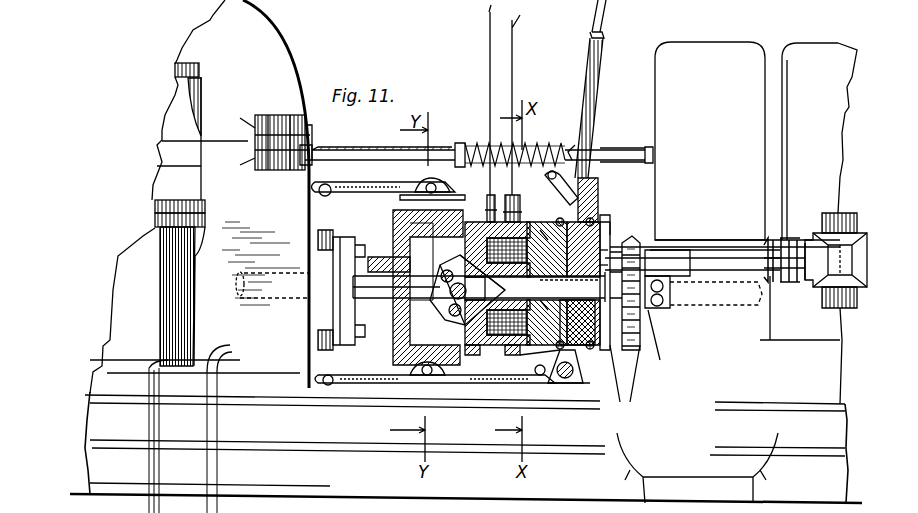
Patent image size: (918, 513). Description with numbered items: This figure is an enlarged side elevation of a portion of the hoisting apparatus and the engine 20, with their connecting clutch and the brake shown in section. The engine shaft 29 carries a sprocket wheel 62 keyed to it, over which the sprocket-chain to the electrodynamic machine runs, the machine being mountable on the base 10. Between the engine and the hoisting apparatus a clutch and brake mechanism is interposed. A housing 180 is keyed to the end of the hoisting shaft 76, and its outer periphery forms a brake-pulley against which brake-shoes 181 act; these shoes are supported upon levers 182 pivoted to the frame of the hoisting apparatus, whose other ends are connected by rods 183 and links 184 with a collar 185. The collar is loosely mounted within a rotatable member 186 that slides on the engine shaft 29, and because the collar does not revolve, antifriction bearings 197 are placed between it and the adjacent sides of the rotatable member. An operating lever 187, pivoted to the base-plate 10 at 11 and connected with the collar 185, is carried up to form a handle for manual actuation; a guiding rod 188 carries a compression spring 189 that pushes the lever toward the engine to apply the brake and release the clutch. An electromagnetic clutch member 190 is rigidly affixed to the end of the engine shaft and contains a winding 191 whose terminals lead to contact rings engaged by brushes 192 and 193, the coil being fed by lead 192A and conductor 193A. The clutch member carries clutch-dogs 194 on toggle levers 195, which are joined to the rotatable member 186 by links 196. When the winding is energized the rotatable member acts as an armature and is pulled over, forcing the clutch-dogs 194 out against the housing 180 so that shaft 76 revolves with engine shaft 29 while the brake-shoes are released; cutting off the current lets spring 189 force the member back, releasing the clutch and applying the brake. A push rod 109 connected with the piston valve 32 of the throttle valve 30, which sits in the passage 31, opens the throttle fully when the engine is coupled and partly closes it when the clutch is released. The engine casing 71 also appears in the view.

The base 10 is at (110, 416).
The pivot 11 is at (578, 385).
The engine 20 is at (665, 82).
The engine shaft 29 is at (596, 336).
The throttle valve 30 is at (812, 280).
The passage 31 is at (846, 315).
The piston valve 32 is at (780, 245).
The sprocket wheel 62 is at (640, 315).
The head casing 71 is at (287, 62).
The shaft 76 is at (372, 310).
The push rod 109 is at (714, 258).
The housing 180 is at (395, 350).
The brake-shoes 181 is at (410, 195).
The levers 182 is at (480, 165).
The rods 183 is at (596, 205).
The links 184 is at (590, 208).
The collar 185 is at (590, 230).
The rotatable member 186 is at (600, 243).
The operating lever 187 is at (586, 92).
The guiding rod 188 is at (606, 155).
The compression spring 189 is at (480, 142).
The electromagnetic clutch member 190 is at (505, 195).
The winding 191 is at (548, 345).
The brush 192 is at (450, 192).
The lead 192A is at (490, 62).
The brush 193 is at (575, 190).
The conductor 193A is at (514, 64).
The clutch-dogs 194 is at (445, 268).
The toggle levers 195 is at (450, 291).
The links 196 is at (475, 348).
The antifriction bearings 197 is at (625, 360).